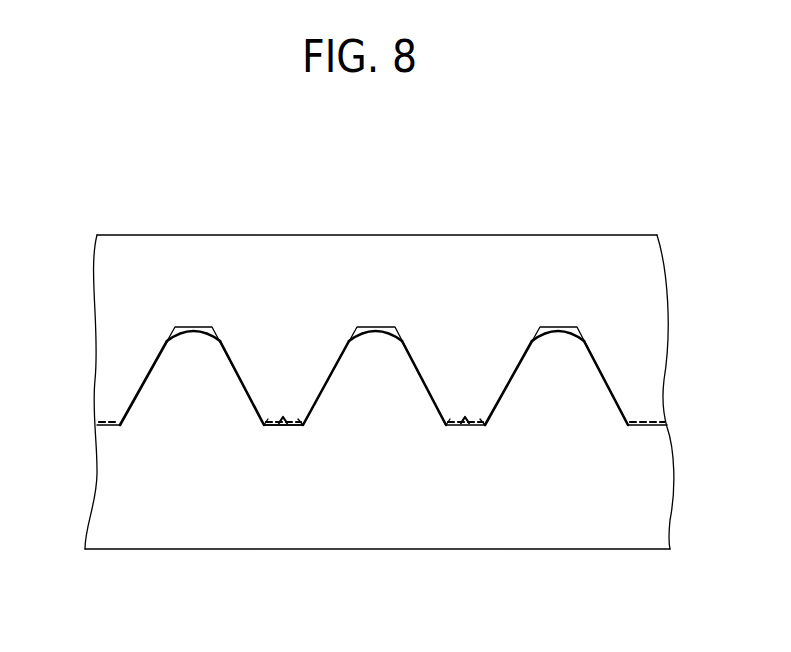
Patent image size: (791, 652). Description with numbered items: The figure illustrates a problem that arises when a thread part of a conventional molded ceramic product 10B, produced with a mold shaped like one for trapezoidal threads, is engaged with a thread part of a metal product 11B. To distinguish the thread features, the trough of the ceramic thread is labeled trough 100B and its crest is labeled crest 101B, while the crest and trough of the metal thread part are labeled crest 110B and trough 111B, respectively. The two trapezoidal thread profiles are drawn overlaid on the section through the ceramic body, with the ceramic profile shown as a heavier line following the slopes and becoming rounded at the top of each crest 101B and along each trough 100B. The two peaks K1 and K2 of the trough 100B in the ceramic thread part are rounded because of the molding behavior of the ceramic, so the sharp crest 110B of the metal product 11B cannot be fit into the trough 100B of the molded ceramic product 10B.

The molded ceramic product 10B is at (372, 495).
The metal product 11B is at (383, 286).
The trough 100B is at (289, 432).
The crest 101B is at (216, 352).
The crest 110B is at (273, 427).
The trough 111B is at (174, 331).
The peak K1 is at (268, 417).
The peak K2 is at (297, 417).